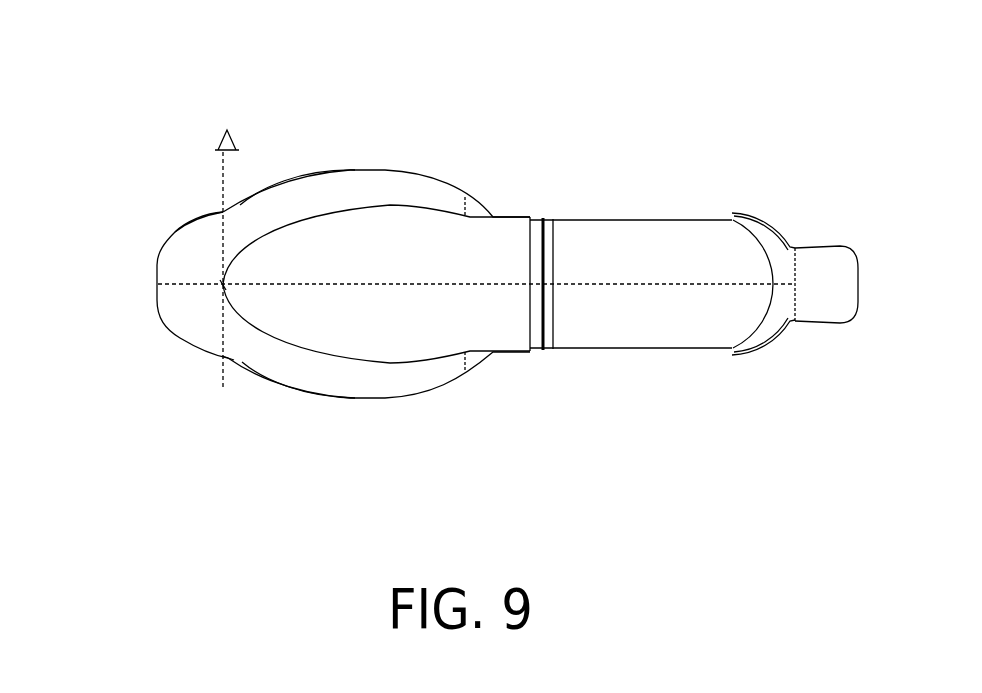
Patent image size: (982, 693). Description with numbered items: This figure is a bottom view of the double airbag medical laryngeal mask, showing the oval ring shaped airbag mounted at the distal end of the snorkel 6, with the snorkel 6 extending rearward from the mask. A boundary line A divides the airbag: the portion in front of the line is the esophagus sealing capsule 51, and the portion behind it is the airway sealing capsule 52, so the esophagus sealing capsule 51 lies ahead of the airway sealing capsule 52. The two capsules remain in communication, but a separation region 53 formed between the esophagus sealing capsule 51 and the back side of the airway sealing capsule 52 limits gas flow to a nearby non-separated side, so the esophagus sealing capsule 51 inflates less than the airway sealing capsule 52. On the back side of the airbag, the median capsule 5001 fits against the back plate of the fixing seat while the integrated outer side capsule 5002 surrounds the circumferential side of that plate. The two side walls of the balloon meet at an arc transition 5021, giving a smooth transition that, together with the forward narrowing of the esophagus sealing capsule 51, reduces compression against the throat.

The outer side capsule 5002 is at (177, 263).
The esophagus sealing capsule 51 is at (197, 218).
The airway sealing capsule 52 is at (333, 170).
The median capsule 5001 is at (385, 233).
The separation region 53 is at (223, 288).
The arc transition 5021 is at (228, 358).
The snorkel 6 is at (650, 220).